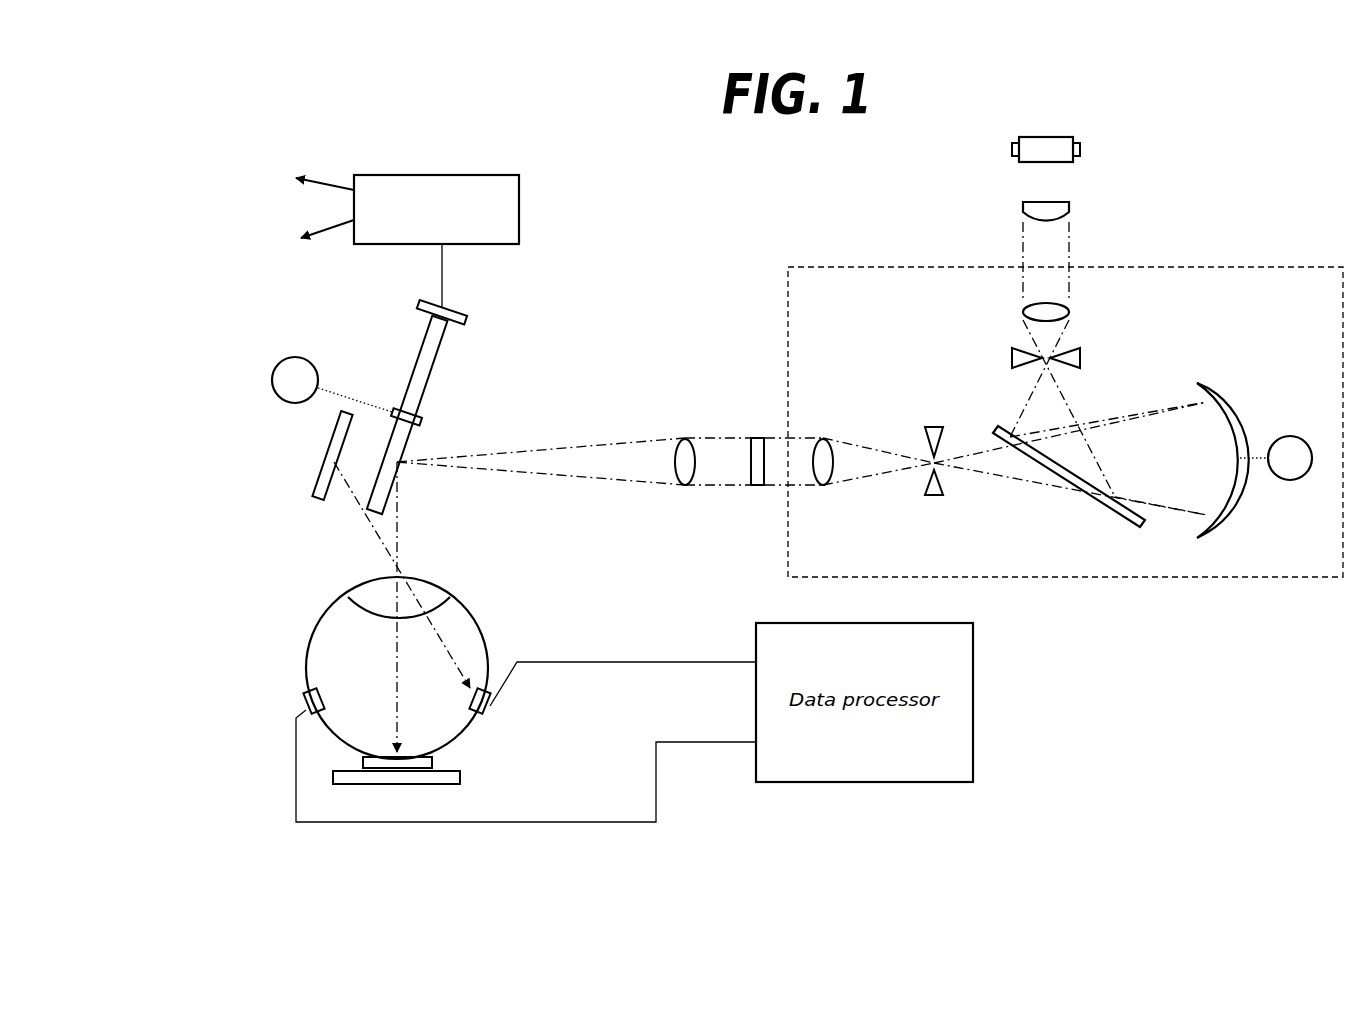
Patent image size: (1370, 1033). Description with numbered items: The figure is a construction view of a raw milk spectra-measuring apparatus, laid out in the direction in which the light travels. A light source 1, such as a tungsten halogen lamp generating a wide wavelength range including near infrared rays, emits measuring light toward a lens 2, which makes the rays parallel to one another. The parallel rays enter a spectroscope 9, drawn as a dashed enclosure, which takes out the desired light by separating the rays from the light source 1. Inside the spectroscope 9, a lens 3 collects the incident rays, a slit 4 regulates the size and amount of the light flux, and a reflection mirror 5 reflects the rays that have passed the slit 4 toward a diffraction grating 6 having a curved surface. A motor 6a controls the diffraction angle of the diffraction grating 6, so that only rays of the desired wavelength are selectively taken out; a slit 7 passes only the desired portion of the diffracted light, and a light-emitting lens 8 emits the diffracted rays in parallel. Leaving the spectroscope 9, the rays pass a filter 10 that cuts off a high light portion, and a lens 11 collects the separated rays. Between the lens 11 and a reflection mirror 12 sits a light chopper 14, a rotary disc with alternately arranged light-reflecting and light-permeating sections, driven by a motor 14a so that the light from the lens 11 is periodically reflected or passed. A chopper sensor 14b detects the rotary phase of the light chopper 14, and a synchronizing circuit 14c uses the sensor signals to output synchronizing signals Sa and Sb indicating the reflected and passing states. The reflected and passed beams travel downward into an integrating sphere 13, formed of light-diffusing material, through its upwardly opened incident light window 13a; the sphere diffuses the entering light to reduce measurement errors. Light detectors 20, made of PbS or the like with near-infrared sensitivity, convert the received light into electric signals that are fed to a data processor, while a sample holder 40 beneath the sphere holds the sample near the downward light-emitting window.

The light source 1 is at (1080, 150).
The lens 2 is at (1069, 208).
The lens 3 is at (1060, 315).
The slit 4 is at (1080, 358).
The reflection mirror 5 is at (1130, 524).
The diffraction grating 6 is at (1217, 387).
The motor 6a is at (1292, 436).
The slit 7 is at (934, 427).
The light-emitting lens 8 is at (823, 440).
The spectroscope 9 is at (1193, 265).
The filter 10 is at (757, 440).
The lens 11 is at (683, 440).
The reflection mirror 12 is at (322, 472).
The integrating sphere 13 is at (467, 645).
The incident light window 13a is at (430, 595).
The light chopper 14 is at (433, 360).
The motor 14a is at (275, 362).
The chopper sensor 14b is at (463, 315).
The synchronizing circuit 14c is at (521, 209).
The light detector 20 is at (306, 703).
The sample holder 40 is at (452, 773).